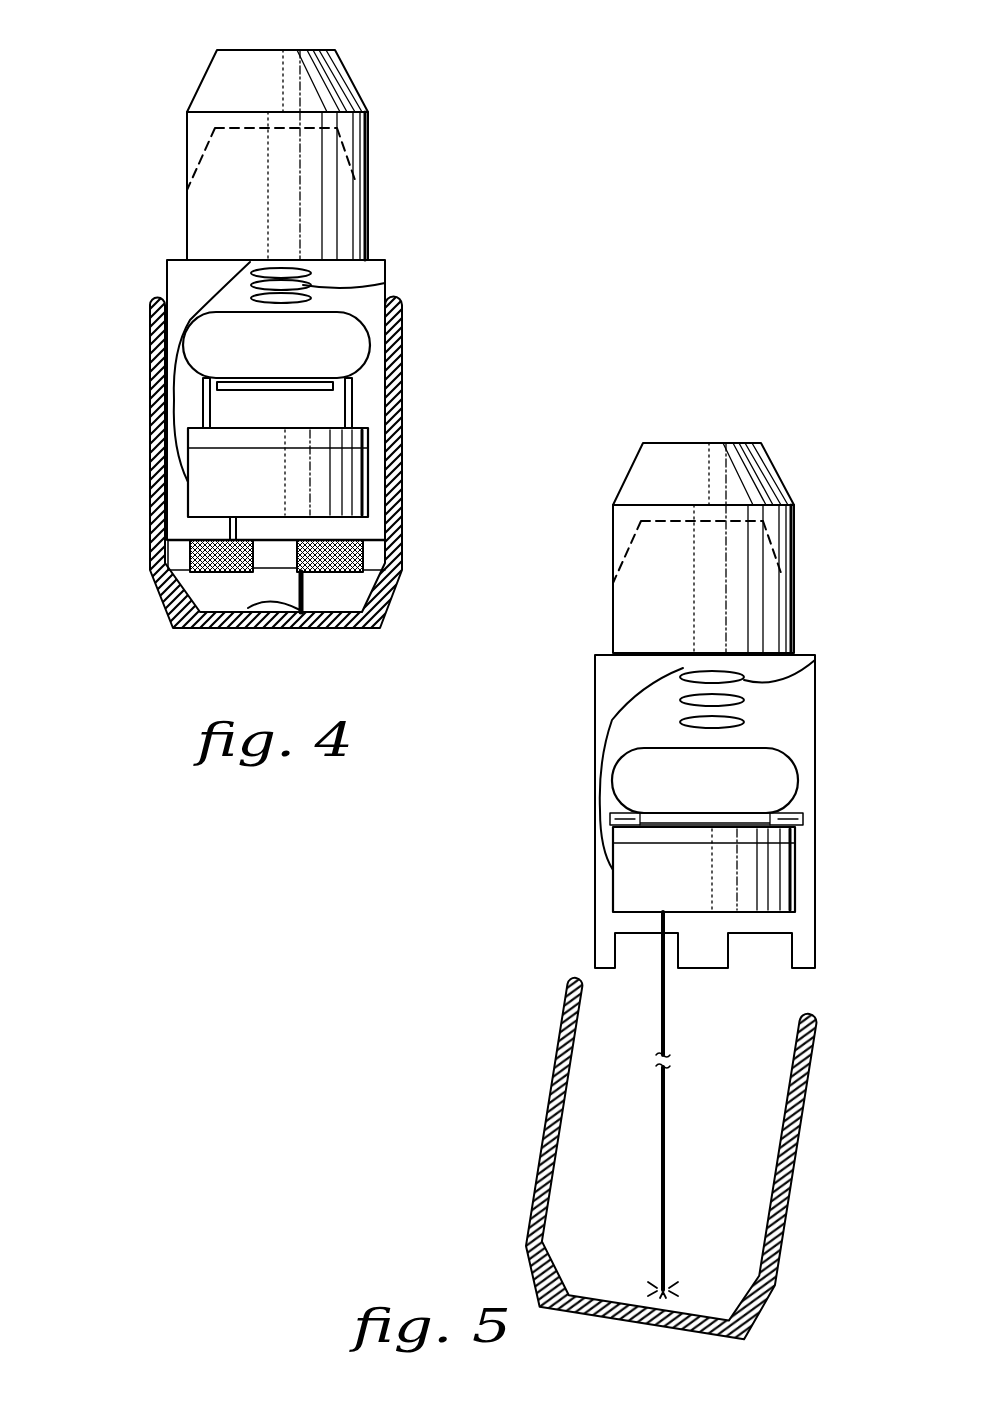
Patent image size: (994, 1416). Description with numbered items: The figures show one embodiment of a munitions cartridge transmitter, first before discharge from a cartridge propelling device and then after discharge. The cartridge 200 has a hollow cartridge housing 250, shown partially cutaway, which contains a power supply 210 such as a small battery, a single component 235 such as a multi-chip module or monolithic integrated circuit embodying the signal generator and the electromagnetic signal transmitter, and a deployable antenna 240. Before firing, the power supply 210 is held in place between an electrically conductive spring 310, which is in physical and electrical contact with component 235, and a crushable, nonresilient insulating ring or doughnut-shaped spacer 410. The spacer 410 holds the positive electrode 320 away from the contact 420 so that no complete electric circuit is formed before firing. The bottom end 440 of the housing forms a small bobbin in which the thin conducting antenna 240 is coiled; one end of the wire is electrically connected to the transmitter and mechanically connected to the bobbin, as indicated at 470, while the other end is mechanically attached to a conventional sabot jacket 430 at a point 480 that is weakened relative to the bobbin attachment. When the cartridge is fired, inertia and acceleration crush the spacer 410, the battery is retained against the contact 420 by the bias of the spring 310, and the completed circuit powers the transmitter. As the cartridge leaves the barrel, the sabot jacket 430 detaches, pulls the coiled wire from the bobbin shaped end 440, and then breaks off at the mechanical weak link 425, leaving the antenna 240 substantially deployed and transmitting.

In FIG. 4, the cartridge 200 is at (207, 76).
In FIG. 4, the hollow cartridge housing 250 is at (182, 260).
In FIG. 4, the electrically conductive spring 310 is at (385, 283).
In FIG. 5, the electrically conductive spring 310 is at (815, 660).
In FIG. 4, the power supply 210 is at (368, 345).
In FIG. 5, the power supply 210 is at (795, 775).
In FIG. 4, the positive electrode 320 is at (250, 392).
In FIG. 4, the spacer 410 is at (352, 410).
In FIG. 5, the spacer 410 is at (800, 820).
In FIG. 4, the contact 420 is at (368, 432).
In FIG. 5, the contact 420 is at (627, 835).
In FIG. 4, the single component 235 is at (367, 490).
In FIG. 5, the single component 235 is at (635, 878).
In FIG. 4, the mechanical connection to the bobbin 470 is at (233, 530).
In FIG. 4, the bobbin shaped end 440 is at (177, 552).
In FIG. 4, the antenna 240 is at (212, 572).
In FIG. 5, the antenna 240 is at (667, 992).
In FIG. 4, the point of mechanical attachment to the casing 480 is at (248, 605).
In FIG. 4, the sabot jacket 430 is at (402, 560).
In FIG. 5, the sabot jacket 430 is at (525, 1222).
In FIG. 5, the mechanical weak link 425 is at (637, 1284).